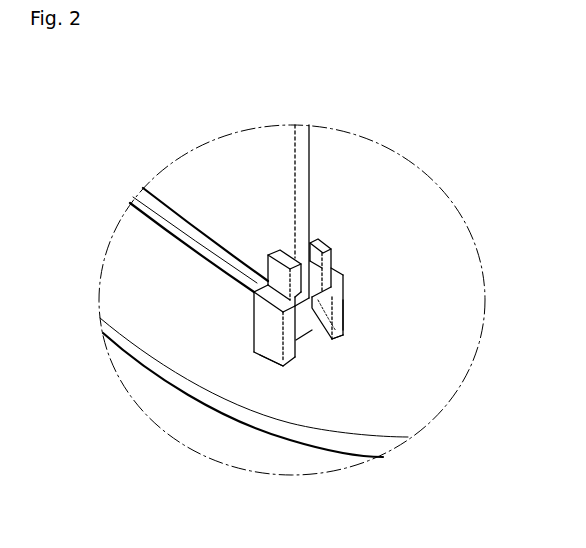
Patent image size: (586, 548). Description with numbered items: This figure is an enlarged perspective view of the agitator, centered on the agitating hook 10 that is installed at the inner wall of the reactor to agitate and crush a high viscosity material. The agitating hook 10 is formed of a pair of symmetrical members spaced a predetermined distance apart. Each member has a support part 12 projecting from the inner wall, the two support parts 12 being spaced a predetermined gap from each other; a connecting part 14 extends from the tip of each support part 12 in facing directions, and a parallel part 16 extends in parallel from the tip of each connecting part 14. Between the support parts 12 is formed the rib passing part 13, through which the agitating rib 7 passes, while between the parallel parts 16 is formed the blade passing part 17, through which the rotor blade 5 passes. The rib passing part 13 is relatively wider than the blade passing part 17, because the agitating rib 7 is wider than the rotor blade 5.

The rotor blade 5 is at (228, 173).
The agitating rib 7 is at (338, 335).
The agitating hook 10 is at (281, 333).
The support part 12 is at (337, 319).
The rib passing part 13 is at (325, 353).
The connecting part 14 is at (254, 320).
The parallel part 16 is at (267, 221).
The blade passing part 17 is at (318, 252).